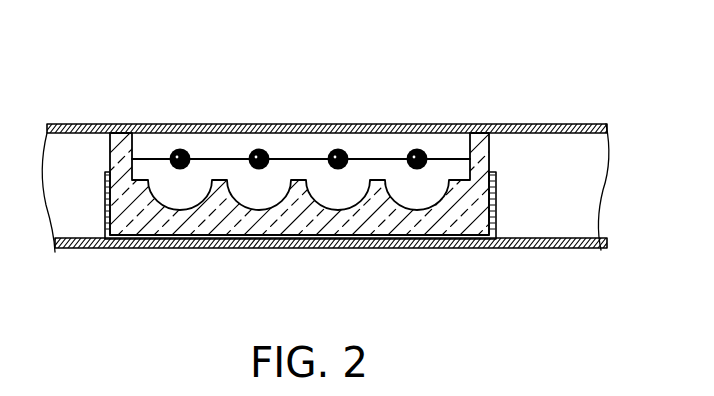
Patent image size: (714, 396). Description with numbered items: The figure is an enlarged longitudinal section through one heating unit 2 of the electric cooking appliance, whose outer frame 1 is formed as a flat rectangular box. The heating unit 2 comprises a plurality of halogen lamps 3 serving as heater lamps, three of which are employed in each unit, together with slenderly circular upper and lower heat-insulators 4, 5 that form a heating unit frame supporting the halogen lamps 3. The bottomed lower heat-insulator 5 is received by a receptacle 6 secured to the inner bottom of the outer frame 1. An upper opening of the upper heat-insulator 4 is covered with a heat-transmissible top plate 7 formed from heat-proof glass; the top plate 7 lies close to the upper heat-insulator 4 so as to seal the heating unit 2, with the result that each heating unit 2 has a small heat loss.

The outer frame 1 is at (565, 248).
The heating unit 2 is at (93, 148).
The halogen lamp 3 is at (343, 150).
The upper heat-insulator 4 is at (491, 148).
The lower heat-insulator 5 is at (462, 227).
The receptacle 6 is at (496, 204).
The top plate 7 is at (582, 124).